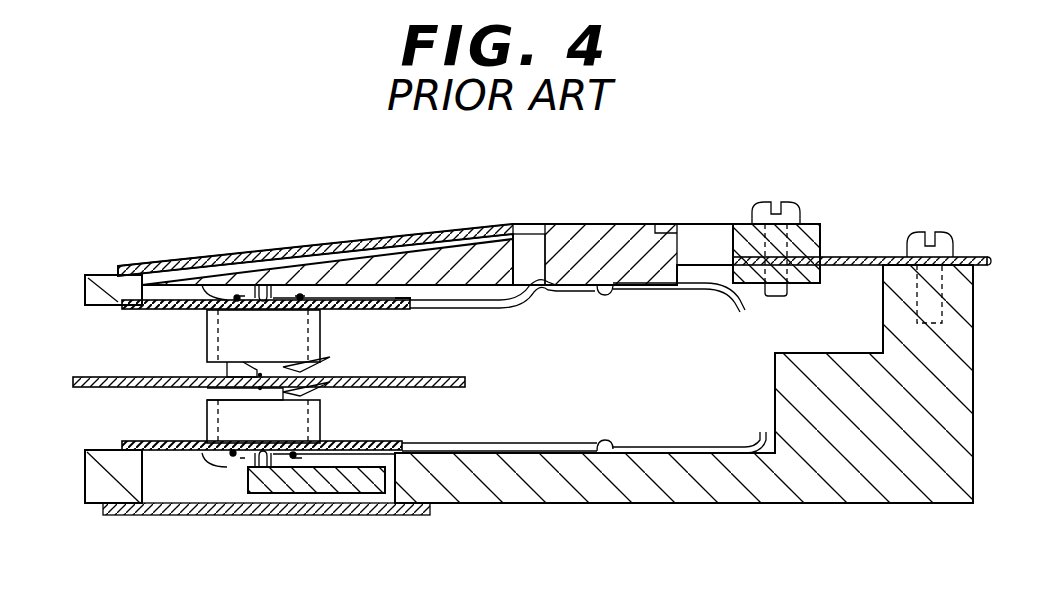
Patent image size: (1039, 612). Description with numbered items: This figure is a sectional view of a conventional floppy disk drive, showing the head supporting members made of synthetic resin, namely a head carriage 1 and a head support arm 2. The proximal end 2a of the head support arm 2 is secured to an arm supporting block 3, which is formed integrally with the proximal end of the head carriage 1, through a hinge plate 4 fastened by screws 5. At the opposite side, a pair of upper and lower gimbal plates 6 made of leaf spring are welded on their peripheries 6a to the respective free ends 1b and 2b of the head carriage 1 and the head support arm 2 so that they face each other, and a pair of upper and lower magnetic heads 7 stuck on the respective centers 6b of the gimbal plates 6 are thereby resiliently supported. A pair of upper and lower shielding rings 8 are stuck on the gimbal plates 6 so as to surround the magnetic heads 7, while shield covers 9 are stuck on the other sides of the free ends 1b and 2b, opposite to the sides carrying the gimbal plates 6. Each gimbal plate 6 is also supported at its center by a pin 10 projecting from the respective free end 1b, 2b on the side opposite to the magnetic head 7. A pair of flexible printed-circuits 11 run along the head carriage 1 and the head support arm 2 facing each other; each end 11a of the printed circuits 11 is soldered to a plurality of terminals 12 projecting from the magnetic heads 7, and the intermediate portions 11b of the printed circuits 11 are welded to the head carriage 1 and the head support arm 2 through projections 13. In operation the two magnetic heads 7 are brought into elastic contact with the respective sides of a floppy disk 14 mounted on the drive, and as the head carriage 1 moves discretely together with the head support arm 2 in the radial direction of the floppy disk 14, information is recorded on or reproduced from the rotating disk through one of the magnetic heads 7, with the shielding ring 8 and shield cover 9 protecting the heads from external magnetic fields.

The head carriage 1 is at (735, 490).
The free end of head carriage 1b is at (100, 473).
The head support arm 2 is at (475, 272).
The proximal end of head support arm 2a is at (748, 240).
The free end of head support arm 2b is at (88, 283).
The arm supporting block 3 is at (963, 405).
The hinge plate 4 is at (840, 262).
The screws 5 is at (917, 234).
The gimbal plates 6 is at (407, 310).
The peripheries of gimbal plates 6a is at (397, 302).
The centers of gimbal plates 6b is at (343, 302).
The magnetic heads 7 is at (300, 393).
The shielding rings 8 is at (227, 413).
The shield covers 9 is at (259, 292).
The pin 10 is at (263, 290).
The flexible printed-circuits 11 is at (600, 286).
The end of printed circuit 11a is at (227, 300).
The intermediate portions of printed circuits 11b is at (633, 282).
The terminals 12 is at (240, 295).
The projections 13 is at (610, 445).
The floppy disk 14 is at (90, 378).